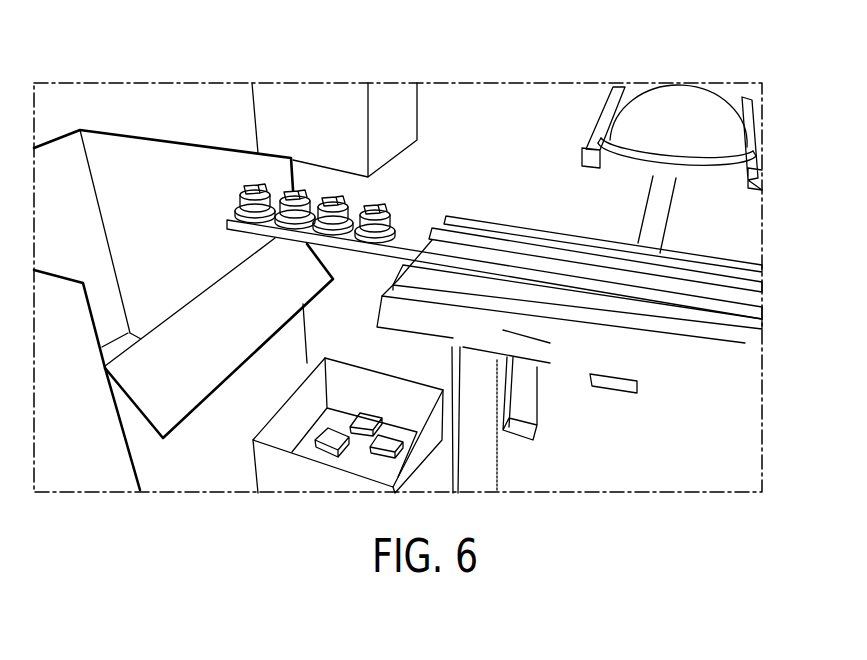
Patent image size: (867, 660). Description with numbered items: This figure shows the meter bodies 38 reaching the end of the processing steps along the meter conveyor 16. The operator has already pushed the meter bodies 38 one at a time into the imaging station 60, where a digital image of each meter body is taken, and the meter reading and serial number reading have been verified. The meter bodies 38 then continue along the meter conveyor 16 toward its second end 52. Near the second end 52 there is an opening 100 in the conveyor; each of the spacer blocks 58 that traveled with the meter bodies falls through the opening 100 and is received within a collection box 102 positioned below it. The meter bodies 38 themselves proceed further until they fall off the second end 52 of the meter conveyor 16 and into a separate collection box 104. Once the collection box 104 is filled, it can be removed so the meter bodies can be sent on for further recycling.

The collection box 104 is at (163, 160).
The second end 52 is at (227, 223).
The meter bodies 38 is at (381, 203).
The opening 100 is at (408, 236).
The meter conveyor 16 is at (492, 252).
The imaging station 60 is at (559, 166).
The collection box 102 is at (338, 370).
The spacer blocks 58 is at (373, 420).